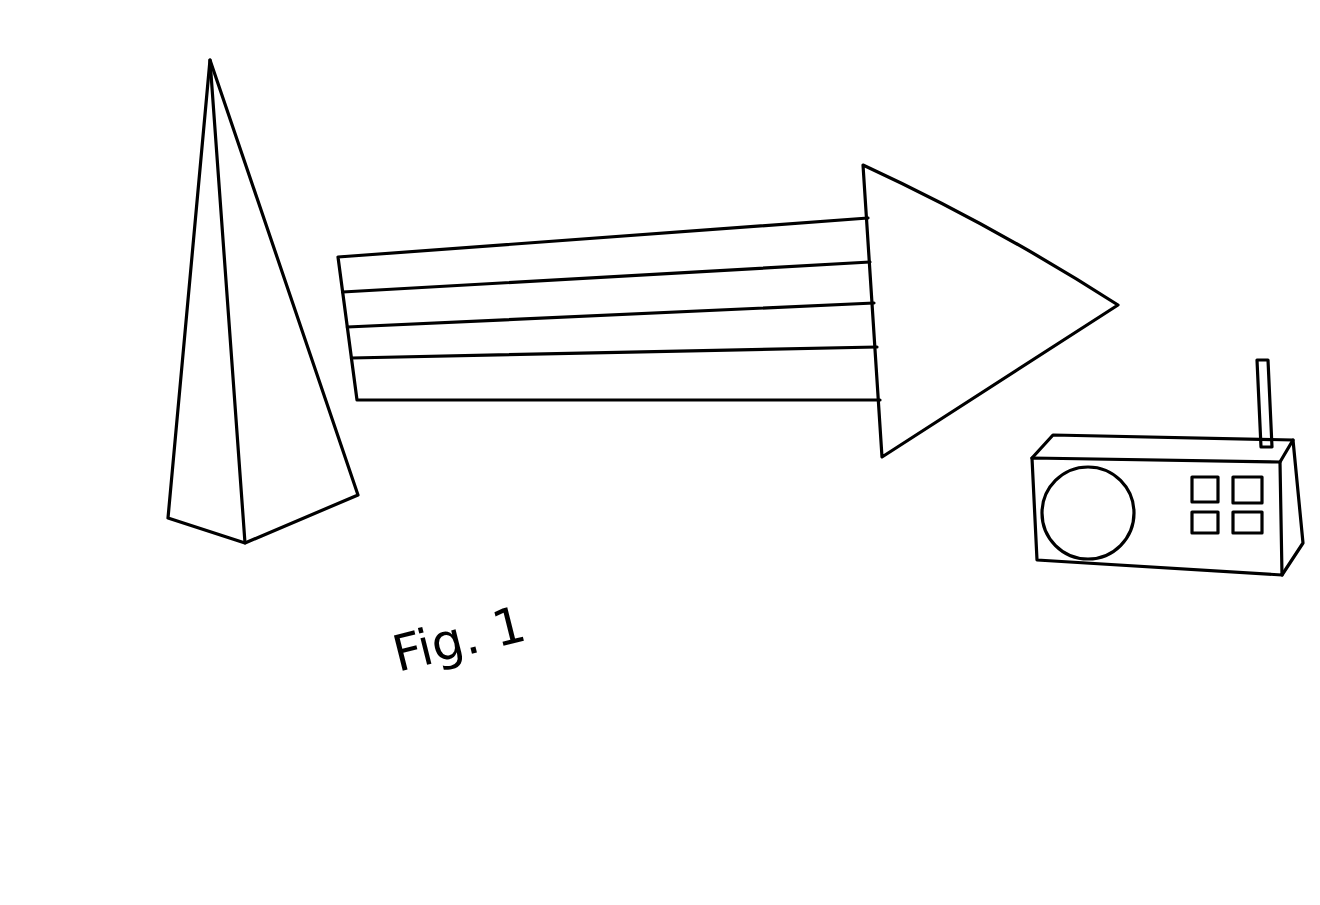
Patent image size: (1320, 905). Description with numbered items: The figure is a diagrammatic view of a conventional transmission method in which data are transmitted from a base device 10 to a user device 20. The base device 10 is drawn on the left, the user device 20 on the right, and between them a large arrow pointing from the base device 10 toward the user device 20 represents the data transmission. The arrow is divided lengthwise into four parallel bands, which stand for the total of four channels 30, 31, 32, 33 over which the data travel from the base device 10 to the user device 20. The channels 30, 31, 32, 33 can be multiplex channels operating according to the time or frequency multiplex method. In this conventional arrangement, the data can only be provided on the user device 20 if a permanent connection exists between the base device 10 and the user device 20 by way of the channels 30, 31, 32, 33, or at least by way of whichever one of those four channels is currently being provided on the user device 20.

The base device 10 is at (160, 225).
The user device 20 is at (1202, 392).
The channel 30 is at (632, 380).
The channel 31 is at (552, 343).
The channel 32 is at (468, 310).
The channel 33 is at (415, 270).